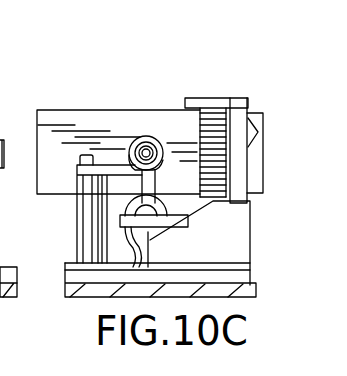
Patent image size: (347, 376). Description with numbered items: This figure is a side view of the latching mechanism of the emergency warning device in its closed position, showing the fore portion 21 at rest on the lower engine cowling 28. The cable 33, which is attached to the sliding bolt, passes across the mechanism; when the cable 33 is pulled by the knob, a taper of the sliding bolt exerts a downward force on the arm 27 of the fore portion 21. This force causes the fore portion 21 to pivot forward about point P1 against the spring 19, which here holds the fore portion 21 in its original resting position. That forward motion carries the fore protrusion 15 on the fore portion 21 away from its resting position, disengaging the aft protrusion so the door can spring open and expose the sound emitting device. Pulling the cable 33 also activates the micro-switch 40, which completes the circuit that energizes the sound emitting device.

The micro-switch 40 is at (62, 197).
The fore portion 21 is at (211, 90).
The spring 19 is at (218, 127).
The fore protrusion 15 is at (258, 132).
The cable 33 is at (136, 128).
The arm 27 is at (170, 216).
The pivot point P1 is at (240, 218).
The lower engine cowling 28 is at (84, 299).